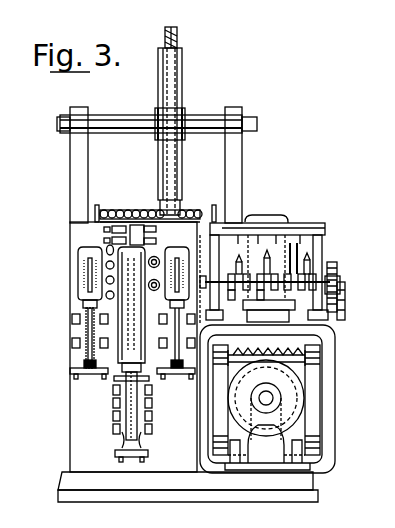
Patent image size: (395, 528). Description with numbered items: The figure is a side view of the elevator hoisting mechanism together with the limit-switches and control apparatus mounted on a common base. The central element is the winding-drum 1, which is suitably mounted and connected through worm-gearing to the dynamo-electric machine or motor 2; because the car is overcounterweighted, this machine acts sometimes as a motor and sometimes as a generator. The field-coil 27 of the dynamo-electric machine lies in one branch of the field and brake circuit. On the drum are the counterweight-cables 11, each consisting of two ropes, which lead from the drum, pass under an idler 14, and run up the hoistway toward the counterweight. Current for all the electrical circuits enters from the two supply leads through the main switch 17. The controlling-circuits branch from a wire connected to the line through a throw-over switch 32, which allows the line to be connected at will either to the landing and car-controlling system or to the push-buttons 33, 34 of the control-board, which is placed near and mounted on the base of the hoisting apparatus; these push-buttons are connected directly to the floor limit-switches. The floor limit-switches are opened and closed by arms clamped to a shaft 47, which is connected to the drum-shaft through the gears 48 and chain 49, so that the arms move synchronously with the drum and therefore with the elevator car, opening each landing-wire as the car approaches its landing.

The winding-drum 1 is at (212, 214).
The counterweight-cables 11 is at (180, 35).
The idler 14 is at (183, 80).
The main switch 17 is at (140, 212).
The throw-over switch 32 is at (108, 242).
The push-button of the control-board 33 is at (158, 256).
The push-button of the control-board 34 is at (154, 291).
The shaft 47 is at (342, 283).
The gears 48 is at (335, 262).
The chain 49 is at (345, 316).
The field-coil 27 is at (300, 360).
The dynamo-electric machine or motor 2 is at (300, 393).